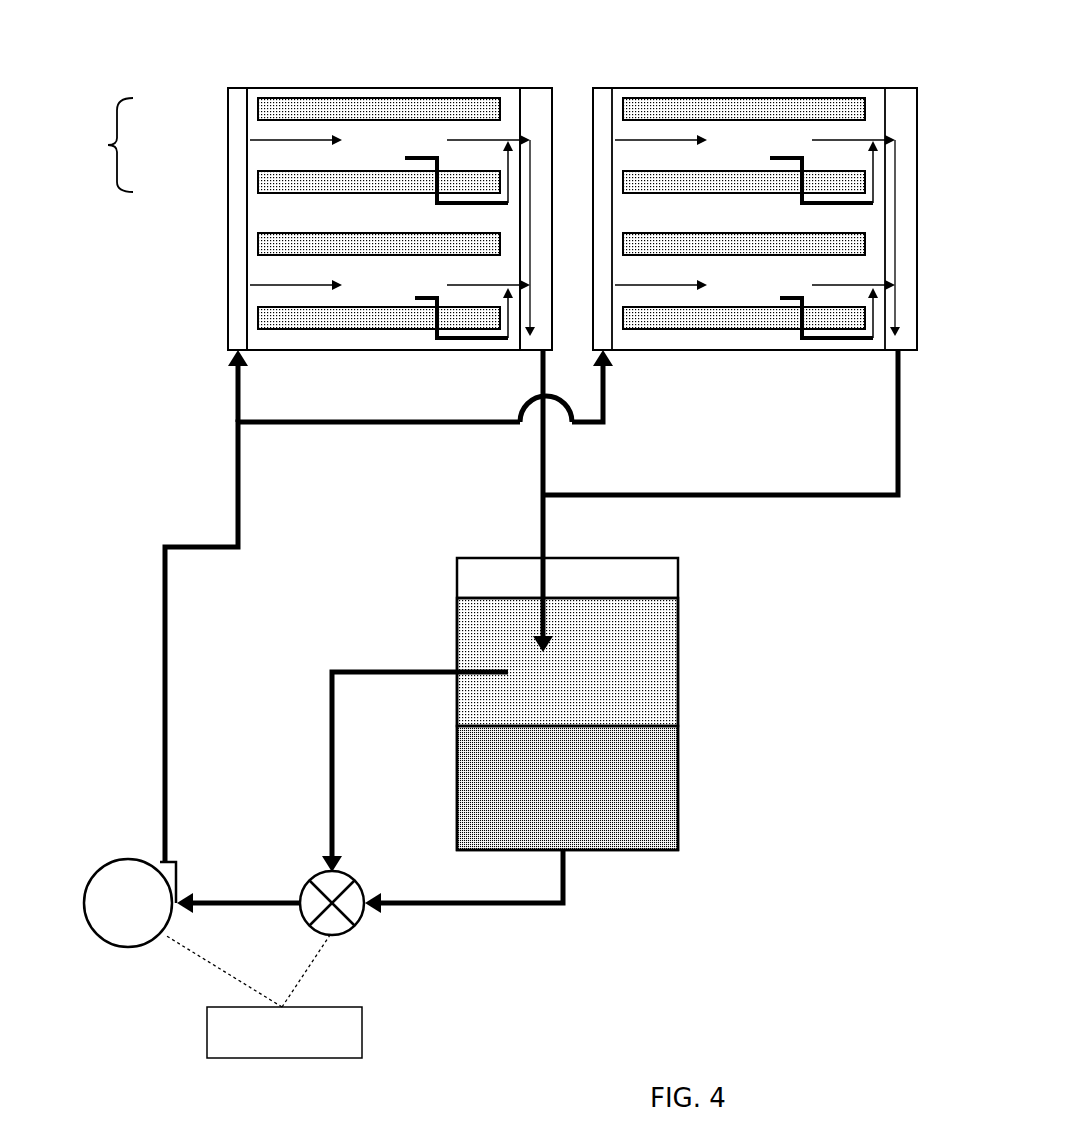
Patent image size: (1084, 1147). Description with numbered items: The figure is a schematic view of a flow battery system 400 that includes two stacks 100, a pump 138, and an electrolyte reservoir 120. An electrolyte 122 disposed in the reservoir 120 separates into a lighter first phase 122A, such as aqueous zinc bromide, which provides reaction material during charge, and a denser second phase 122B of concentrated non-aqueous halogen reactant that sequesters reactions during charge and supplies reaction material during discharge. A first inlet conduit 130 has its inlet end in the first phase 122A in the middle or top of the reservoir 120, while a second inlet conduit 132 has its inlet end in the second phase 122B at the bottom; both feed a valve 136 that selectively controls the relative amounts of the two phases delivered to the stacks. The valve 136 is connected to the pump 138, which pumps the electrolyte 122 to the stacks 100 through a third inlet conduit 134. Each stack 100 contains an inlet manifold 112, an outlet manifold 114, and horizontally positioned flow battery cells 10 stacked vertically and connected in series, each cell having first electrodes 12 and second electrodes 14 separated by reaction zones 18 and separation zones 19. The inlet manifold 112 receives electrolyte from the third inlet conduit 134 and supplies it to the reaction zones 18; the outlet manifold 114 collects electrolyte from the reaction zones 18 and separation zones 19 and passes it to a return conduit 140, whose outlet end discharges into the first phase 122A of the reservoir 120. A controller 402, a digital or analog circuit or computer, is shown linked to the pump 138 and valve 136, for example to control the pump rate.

The flow battery system 400 is at (511, 32).
The stack 100 is at (372, 87).
The flow battery cell 10 is at (108, 145).
The first electrode 12 is at (258, 108).
The second electrode 14 is at (247, 171).
The reaction zone 18 is at (572, 213).
The separation zone 19 is at (617, 239).
The inlet manifold 112 is at (238, 243).
The outlet manifold 114 is at (538, 88).
The electrolyte reservoir 120 is at (683, 638).
The electrolyte 122 is at (676, 724).
The first phase 122A is at (605, 672).
The second phase 122B is at (605, 797).
The first inlet conduit 130 is at (405, 670).
The second inlet conduit 132 is at (563, 905).
The third inlet conduit 134 is at (168, 673).
The valve 136 is at (357, 927).
The pump 138 is at (133, 947).
The return conduit 140 is at (587, 493).
The controller 402 is at (362, 1033).